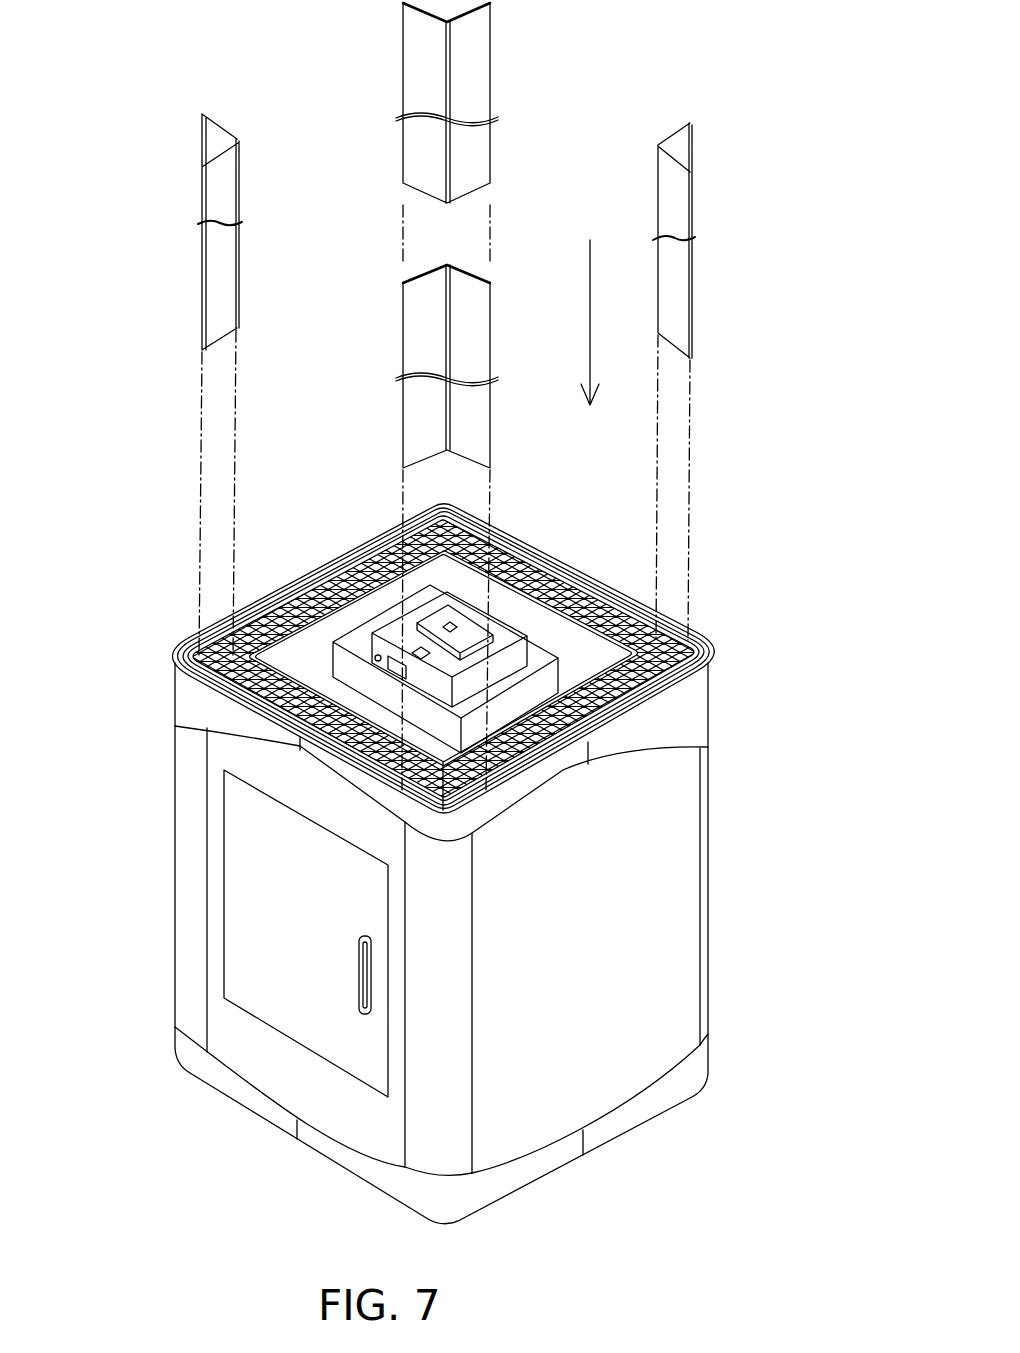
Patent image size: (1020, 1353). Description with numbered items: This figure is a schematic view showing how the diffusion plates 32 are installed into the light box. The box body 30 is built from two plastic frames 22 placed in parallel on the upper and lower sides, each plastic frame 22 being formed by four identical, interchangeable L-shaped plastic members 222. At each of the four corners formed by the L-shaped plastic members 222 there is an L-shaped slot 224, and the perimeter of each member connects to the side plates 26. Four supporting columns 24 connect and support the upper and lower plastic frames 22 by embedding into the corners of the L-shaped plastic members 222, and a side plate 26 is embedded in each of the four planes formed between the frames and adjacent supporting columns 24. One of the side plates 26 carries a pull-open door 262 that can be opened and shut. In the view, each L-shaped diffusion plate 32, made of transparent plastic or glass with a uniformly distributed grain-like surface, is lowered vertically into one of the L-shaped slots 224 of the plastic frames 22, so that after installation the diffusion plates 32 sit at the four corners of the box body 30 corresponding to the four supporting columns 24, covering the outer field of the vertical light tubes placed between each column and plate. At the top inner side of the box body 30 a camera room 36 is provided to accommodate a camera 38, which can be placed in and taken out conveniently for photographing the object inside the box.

The plastic frame 22 is at (169, 712).
The supporting column 24 is at (180, 977).
The side plate 26 is at (622, 1038).
The box body 30 is at (720, 858).
The diffusion plate 32 is at (680, 288).
The camera room 36 is at (383, 618).
The camera 38 is at (508, 638).
The L-shaped plastic member 222 is at (658, 726).
The L-shaped slot 224 is at (700, 642).
The pull-open door 262 is at (273, 992).